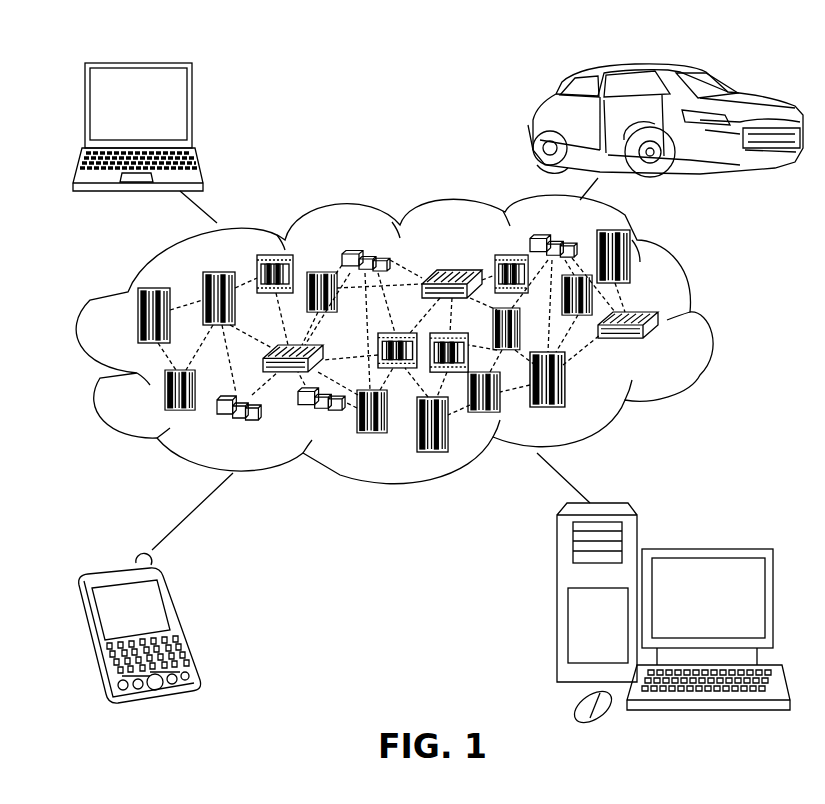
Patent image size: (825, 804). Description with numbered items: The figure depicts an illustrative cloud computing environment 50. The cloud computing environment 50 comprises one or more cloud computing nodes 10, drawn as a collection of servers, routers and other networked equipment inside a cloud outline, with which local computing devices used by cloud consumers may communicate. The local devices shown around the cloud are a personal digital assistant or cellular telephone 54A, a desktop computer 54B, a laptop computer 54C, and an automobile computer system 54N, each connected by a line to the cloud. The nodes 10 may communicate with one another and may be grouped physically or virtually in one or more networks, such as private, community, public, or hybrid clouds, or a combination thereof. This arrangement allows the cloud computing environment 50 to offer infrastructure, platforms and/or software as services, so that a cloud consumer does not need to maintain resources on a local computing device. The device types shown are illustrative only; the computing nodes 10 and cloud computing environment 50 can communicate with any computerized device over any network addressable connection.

The cloud computing nodes 10 is at (673, 352).
The cloud computing environment 50 is at (710, 322).
The personal digital assistant or cellular telephone 54A is at (185, 620).
The desktop computer 54B is at (705, 548).
The laptop computer 54C is at (197, 110).
The automobile computer system 54N is at (533, 122).